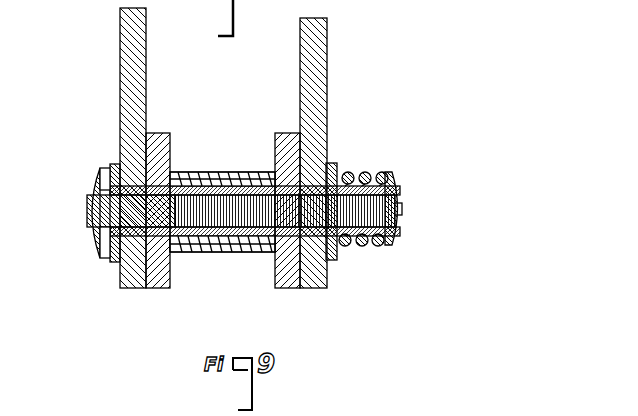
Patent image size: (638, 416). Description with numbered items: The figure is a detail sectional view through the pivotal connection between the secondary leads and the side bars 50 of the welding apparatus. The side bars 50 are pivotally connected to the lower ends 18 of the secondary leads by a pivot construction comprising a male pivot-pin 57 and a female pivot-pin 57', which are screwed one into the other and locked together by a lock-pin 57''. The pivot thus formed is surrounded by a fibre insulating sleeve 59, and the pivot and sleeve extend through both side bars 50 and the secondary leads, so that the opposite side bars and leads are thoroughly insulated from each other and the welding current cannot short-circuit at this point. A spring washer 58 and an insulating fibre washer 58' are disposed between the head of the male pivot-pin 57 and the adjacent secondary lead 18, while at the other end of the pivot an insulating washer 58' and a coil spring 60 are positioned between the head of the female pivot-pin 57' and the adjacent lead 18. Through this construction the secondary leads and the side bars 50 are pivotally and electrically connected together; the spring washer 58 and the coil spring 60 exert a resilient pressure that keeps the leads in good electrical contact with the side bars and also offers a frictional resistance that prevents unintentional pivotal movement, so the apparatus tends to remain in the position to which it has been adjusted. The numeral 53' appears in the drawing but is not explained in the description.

The lower ends of the secondary leads 18 is at (135, 107).
The side bars 50 is at (275, 157).
The threaded sleeve 53' is at (255, 230).
The male pivot-pin 57 is at (112, 213).
The female pivot-pin 57' is at (414, 200).
The lock-pin 57'' is at (318, 206).
The spring washer 58 is at (94, 242).
The insulating fibre washer 58' is at (350, 232).
The fibre insulating sleeve 59 is at (238, 243).
The coil spring 60 is at (364, 246).